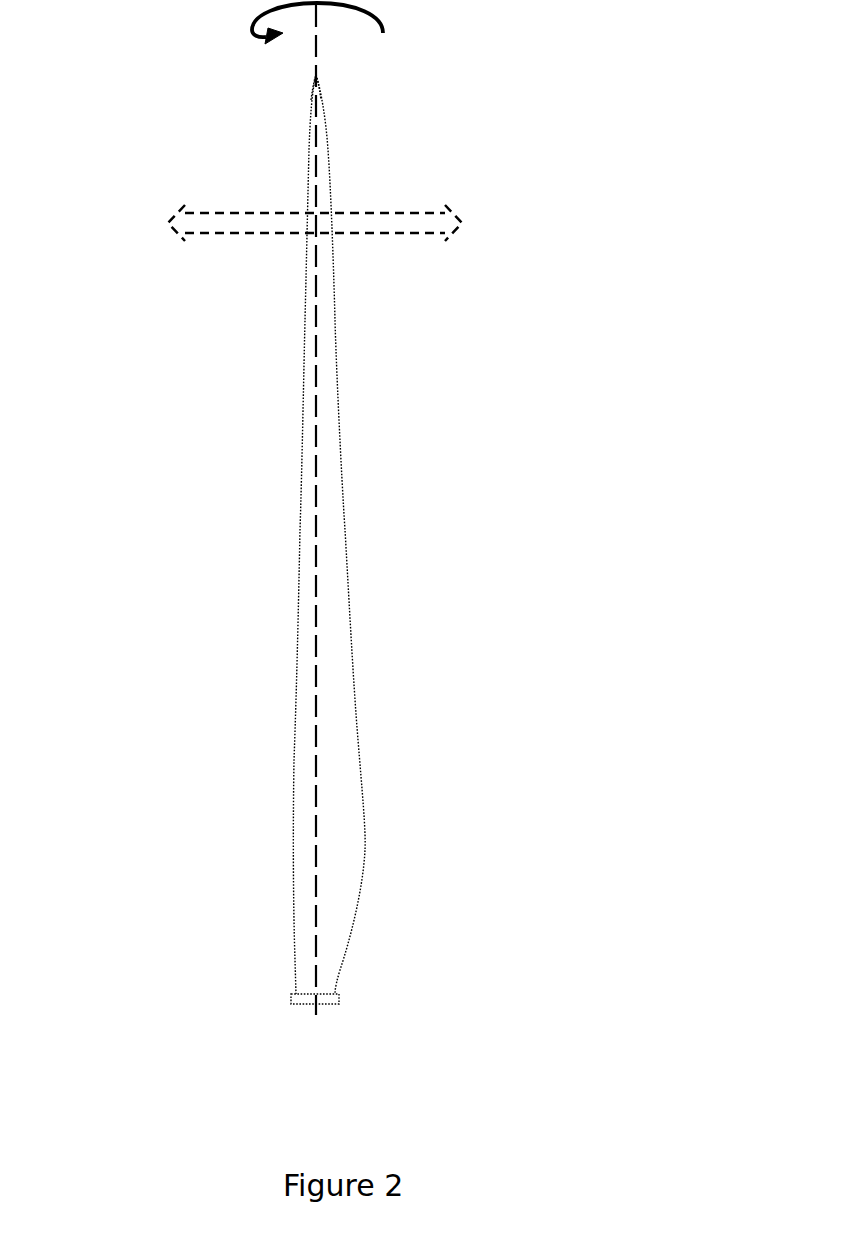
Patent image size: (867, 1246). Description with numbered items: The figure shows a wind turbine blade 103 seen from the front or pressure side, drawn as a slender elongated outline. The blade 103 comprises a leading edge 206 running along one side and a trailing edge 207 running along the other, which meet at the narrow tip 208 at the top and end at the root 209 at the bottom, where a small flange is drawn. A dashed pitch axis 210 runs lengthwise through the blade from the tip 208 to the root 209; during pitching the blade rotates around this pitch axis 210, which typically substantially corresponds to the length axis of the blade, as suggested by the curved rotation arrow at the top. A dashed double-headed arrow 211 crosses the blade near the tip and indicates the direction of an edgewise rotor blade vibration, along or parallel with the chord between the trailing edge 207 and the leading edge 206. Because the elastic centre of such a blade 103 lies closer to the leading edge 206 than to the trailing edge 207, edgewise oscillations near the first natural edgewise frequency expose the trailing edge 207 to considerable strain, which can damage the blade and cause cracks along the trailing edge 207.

The wind turbine blade 103 is at (372, 524).
The leading edge 206 is at (302, 415).
The trailing edge 207 is at (342, 533).
The tip 208 is at (338, 71).
The root 209 is at (350, 997).
The pitch axis 210 is at (315, 53).
The arrow 211 is at (348, 222).